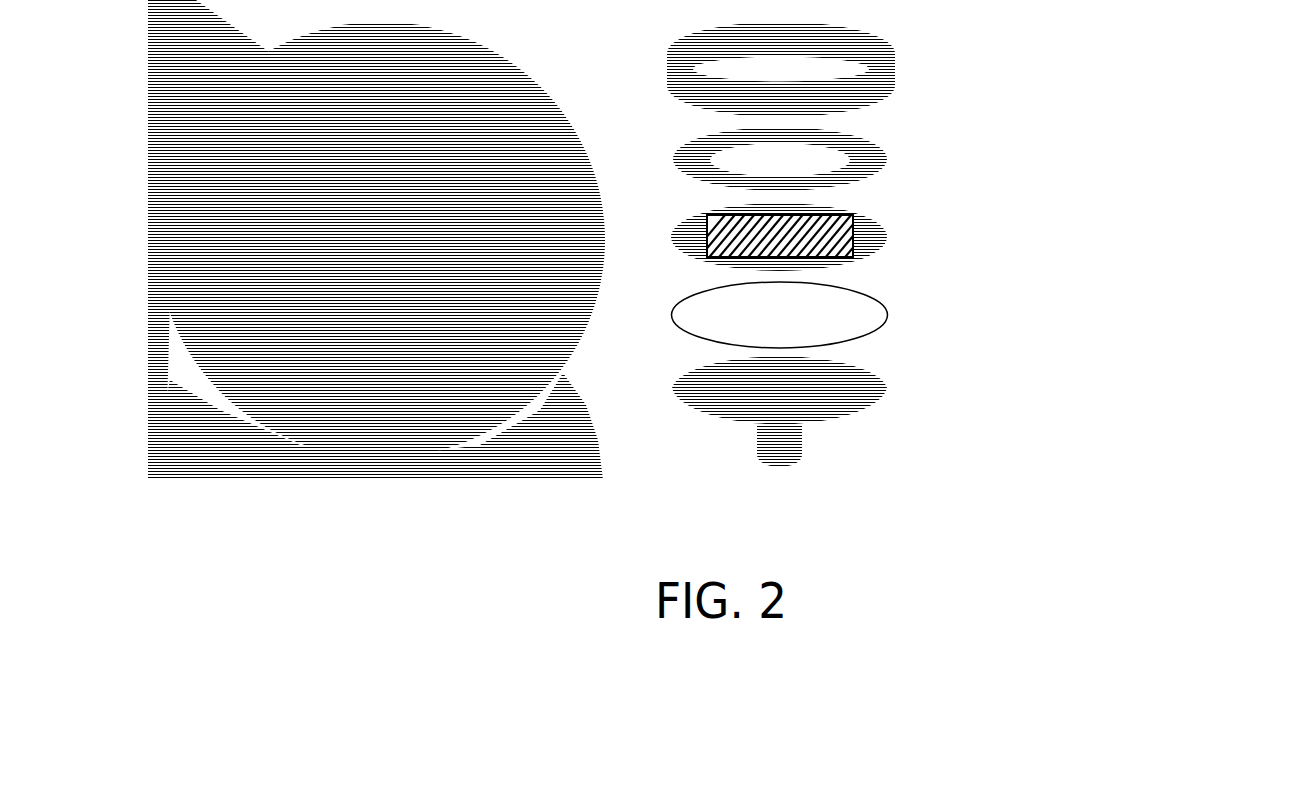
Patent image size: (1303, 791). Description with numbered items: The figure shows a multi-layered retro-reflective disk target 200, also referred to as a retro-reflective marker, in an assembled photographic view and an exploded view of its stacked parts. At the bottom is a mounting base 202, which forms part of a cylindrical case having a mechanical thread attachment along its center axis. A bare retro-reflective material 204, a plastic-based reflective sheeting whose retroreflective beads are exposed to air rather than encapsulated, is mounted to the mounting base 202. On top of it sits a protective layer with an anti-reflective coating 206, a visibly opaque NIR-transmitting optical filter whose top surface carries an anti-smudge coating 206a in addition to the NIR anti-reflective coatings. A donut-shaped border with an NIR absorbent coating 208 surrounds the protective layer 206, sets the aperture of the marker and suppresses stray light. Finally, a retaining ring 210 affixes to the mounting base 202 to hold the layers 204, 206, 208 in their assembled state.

The retro-reflective disk target 200 is at (118, 188).
The mounting base 202 is at (923, 415).
The bare retro-reflective material 204 is at (923, 326).
The protective layer with anti-reflective coating 206 is at (944, 212).
The anti-smudge coating 206a is at (705, 240).
The border with NIR absorbent coating 208 is at (922, 144).
The retaining ring 210 is at (921, 54).